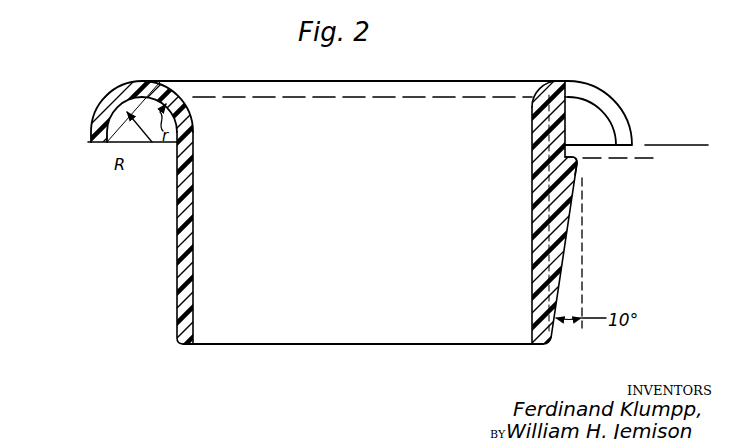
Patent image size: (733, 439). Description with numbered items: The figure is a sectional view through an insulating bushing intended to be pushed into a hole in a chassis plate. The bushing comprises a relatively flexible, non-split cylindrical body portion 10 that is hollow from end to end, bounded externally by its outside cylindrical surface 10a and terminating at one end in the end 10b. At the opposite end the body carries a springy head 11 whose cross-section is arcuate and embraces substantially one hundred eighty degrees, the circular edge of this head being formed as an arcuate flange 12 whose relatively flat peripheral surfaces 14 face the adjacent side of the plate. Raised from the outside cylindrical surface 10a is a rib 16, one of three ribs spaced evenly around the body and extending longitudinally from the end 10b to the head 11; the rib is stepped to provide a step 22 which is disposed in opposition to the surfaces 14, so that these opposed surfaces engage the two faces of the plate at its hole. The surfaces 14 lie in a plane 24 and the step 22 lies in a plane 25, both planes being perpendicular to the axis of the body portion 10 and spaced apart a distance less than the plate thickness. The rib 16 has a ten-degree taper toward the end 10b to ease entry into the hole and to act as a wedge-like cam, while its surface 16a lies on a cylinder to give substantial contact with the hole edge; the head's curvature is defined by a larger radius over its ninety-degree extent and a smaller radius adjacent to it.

The cylindrical body portion 10 is at (366, 219).
The outside cylindrical surface 10a is at (177, 268).
The end of body portion 10b is at (413, 345).
The head 11 is at (448, 81).
The arcuate flange 12 is at (92, 121).
The peripheral surfaces 14 is at (90, 144).
The rib 16 is at (575, 215).
The rib surface 16a is at (567, 115).
The step 22 is at (576, 157).
The plane 24 is at (673, 145).
The plane 25 is at (653, 158).